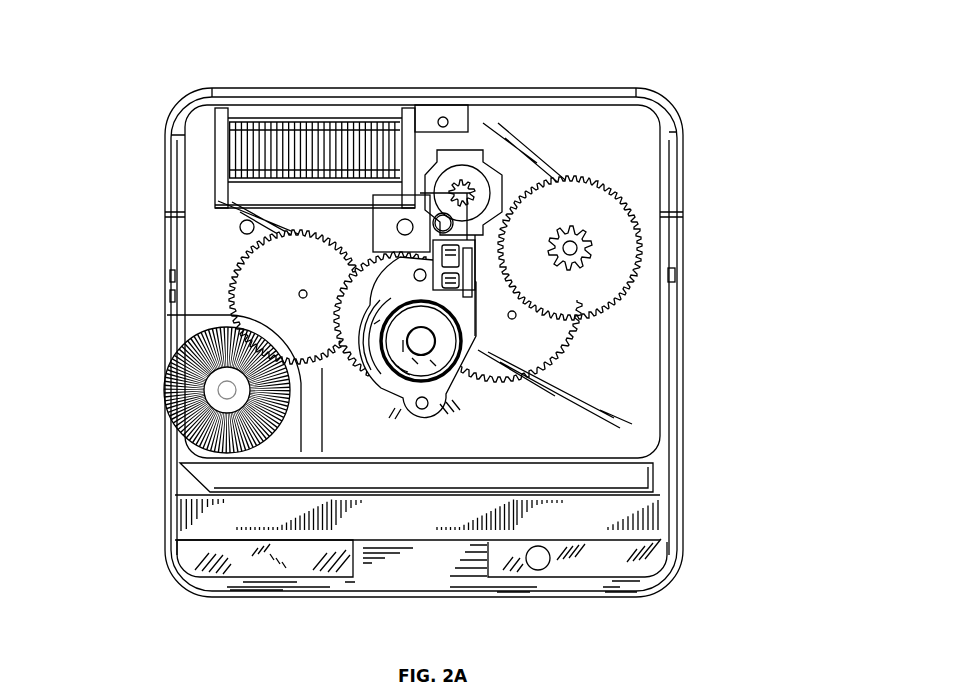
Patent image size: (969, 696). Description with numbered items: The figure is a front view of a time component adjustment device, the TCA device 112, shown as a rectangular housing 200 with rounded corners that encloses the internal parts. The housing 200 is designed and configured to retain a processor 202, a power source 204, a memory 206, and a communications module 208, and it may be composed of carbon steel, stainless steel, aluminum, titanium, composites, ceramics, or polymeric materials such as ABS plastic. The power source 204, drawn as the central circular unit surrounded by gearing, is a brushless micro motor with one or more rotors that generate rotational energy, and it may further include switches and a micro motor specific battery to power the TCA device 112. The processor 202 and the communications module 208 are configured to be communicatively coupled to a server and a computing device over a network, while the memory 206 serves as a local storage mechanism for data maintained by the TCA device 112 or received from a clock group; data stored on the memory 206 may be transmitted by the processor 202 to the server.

The TCA device 112 is at (158, 78).
The housing 200 is at (648, 430).
The processor 202 is at (452, 253).
The power source 204 is at (447, 344).
The memory 206 is at (468, 277).
The communications module 208 is at (424, 277).